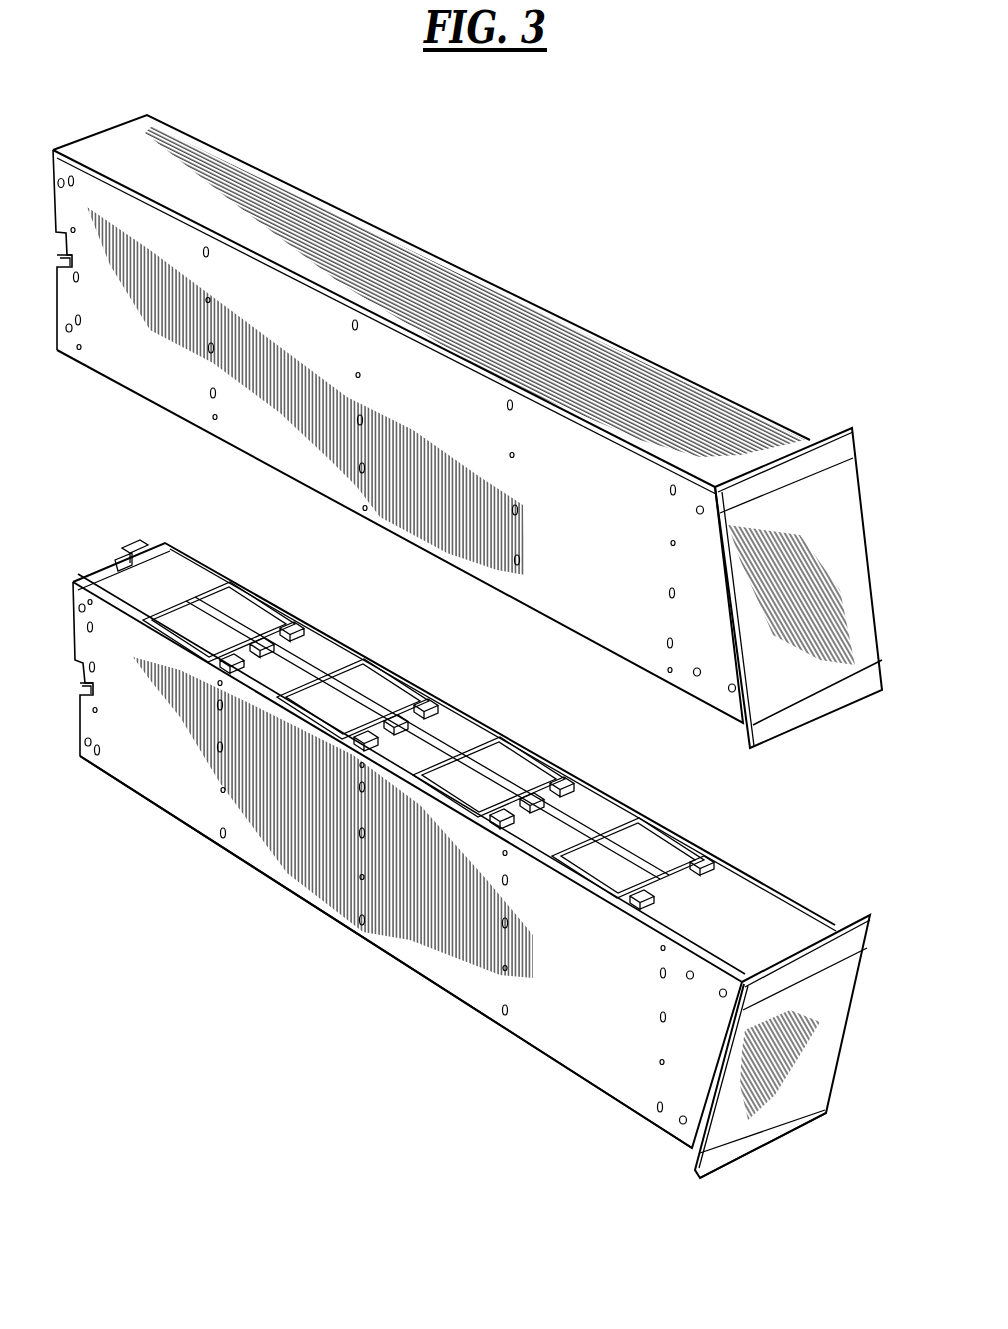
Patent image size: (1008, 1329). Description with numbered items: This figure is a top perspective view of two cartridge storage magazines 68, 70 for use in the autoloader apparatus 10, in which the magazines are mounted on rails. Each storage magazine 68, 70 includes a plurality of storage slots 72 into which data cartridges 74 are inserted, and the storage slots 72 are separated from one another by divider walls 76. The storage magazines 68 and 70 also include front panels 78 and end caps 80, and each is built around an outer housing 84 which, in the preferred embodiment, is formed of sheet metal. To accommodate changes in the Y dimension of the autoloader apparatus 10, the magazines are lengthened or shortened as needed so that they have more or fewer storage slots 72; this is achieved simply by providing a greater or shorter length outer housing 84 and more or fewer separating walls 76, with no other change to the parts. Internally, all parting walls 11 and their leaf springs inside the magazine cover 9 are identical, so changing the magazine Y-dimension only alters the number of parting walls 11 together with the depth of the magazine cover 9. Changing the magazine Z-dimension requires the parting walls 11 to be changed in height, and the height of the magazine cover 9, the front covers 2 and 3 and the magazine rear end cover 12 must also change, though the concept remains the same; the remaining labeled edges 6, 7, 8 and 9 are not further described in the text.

The front cover 2 is at (813, 728).
The front cover 3 is at (744, 1068).
The bottom flange edge of upper unit 6 is at (890, 662).
The bottom flange edge of lower unit 7 is at (692, 1179).
The upper housing cover 8 is at (410, 234).
The magazine cover 9 is at (295, 895).
The autoloader apparatus 10 is at (668, 864).
The parting wall 11 is at (606, 799).
The magazine rear end cover 12 is at (103, 566).
The storage magazine 68 is at (543, 347).
The storage magazine 70 is at (460, 973).
The storage slot 72 is at (317, 641).
The data cartridge 74 is at (470, 740).
The divider wall 76 is at (443, 716).
The front panel 78 is at (833, 550).
The end cap 80 is at (68, 289).
The outer housing 84 is at (257, 190).